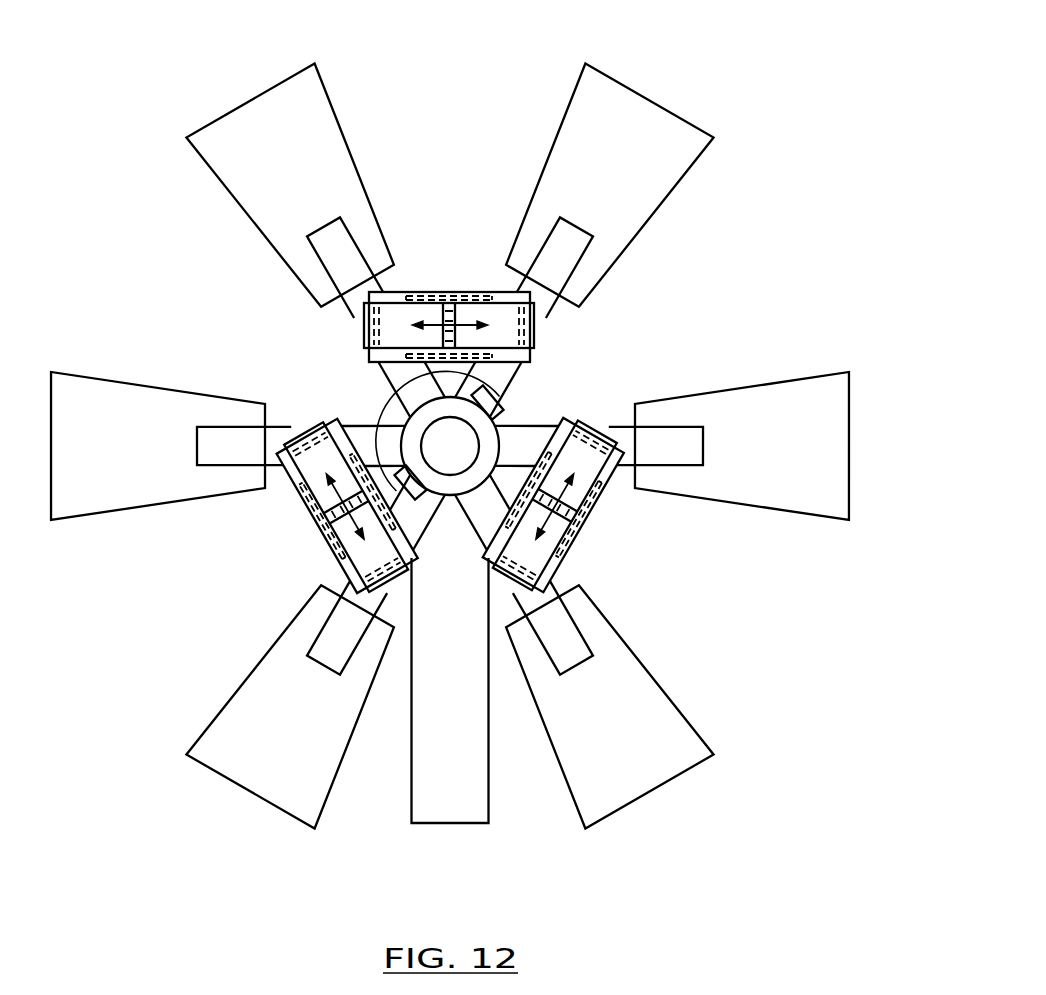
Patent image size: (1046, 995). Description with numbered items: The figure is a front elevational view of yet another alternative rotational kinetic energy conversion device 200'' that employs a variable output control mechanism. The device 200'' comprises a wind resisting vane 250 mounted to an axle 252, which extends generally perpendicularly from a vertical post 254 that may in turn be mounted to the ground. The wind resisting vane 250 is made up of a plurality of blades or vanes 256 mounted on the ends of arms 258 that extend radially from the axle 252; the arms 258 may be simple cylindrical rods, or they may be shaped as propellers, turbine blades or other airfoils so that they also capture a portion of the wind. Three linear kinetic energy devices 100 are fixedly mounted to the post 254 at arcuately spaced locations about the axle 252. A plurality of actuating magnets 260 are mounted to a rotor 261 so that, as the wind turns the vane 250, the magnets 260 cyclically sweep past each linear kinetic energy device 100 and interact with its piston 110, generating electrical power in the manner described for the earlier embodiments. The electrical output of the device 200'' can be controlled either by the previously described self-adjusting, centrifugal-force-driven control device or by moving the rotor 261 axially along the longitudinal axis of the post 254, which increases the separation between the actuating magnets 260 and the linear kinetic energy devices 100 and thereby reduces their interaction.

The rotational kinetic energy conversion device 200'' is at (793, 42).
The wind resisting vane 250 is at (656, 222).
The blades or vanes 256 is at (264, 161).
The arms 258 is at (541, 310).
The linear kinetic energy device 100 is at (463, 292).
The piston 110 is at (449, 306).
The axle 252 is at (431, 460).
The actuating magnets 260 is at (520, 446).
The rotor 261 is at (402, 416).
The vertical post 254 is at (473, 800).